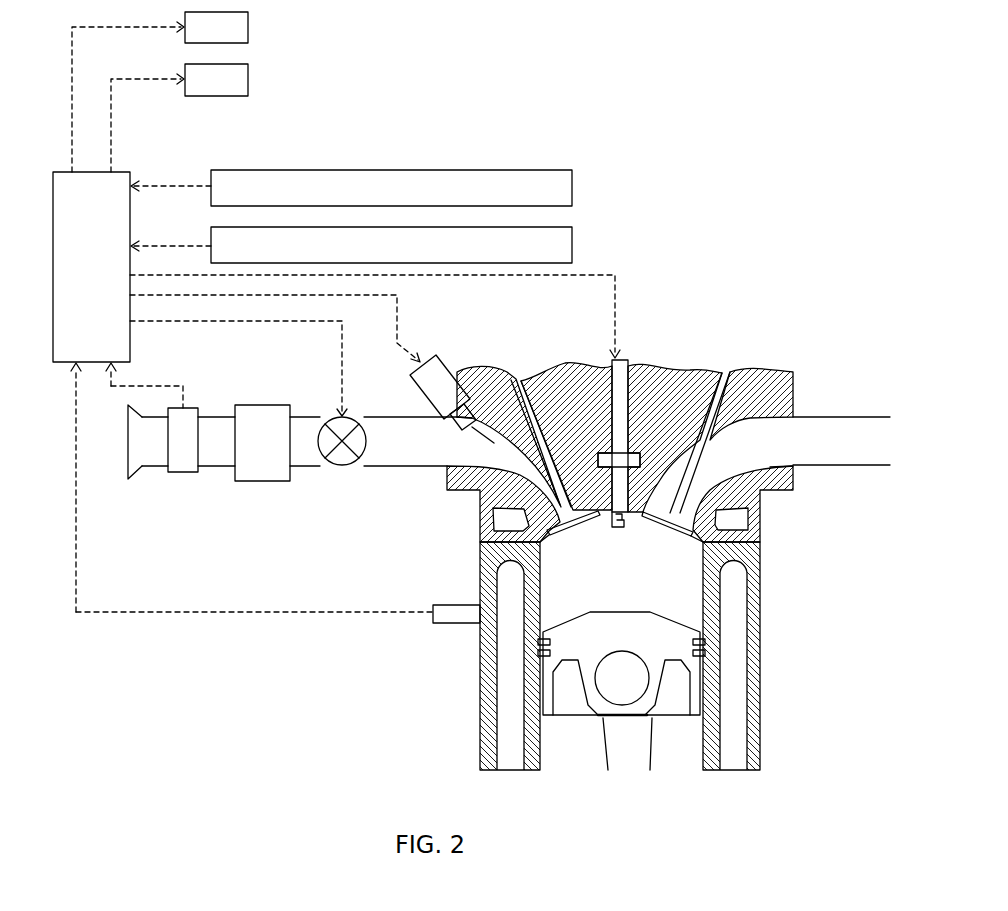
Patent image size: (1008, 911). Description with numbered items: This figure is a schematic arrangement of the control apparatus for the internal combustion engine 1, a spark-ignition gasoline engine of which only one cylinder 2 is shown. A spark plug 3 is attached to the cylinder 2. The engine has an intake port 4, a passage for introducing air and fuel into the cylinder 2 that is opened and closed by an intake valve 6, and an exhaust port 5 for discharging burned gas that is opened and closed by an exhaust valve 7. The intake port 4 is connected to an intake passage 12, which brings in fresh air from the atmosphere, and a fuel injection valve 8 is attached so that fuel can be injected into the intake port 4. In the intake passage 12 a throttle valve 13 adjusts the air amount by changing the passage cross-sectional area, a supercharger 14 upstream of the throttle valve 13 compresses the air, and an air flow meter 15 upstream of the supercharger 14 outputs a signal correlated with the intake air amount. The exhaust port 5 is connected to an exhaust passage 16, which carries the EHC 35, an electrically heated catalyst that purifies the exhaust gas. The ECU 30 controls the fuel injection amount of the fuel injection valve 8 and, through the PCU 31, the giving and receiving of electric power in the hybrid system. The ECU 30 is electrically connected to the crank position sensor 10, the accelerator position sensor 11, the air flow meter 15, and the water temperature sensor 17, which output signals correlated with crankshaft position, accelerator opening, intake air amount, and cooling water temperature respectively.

The internal combustion engine 1 is at (787, 540).
The cylinder 2 is at (705, 577).
The spark plug 3 is at (628, 362).
The intake port 4 is at (482, 458).
The exhaust port 5 is at (767, 465).
The intake valve 6 is at (558, 534).
The exhaust valve 7 is at (667, 532).
The fuel injection valve 8 is at (445, 360).
The crank position sensor 10 is at (572, 188).
The accelerator position sensor 11 is at (572, 247).
The intake passage 12 is at (398, 466).
The throttle valve 13 is at (330, 416).
The supercharger 14 is at (262, 404).
The air flow meter 15 is at (185, 472).
The exhaust passage 16 is at (849, 417).
The water temperature sensor 17 is at (452, 623).
The ECU 30 is at (122, 172).
The PCU 31 is at (248, 79).
The EHC 35 is at (248, 27).